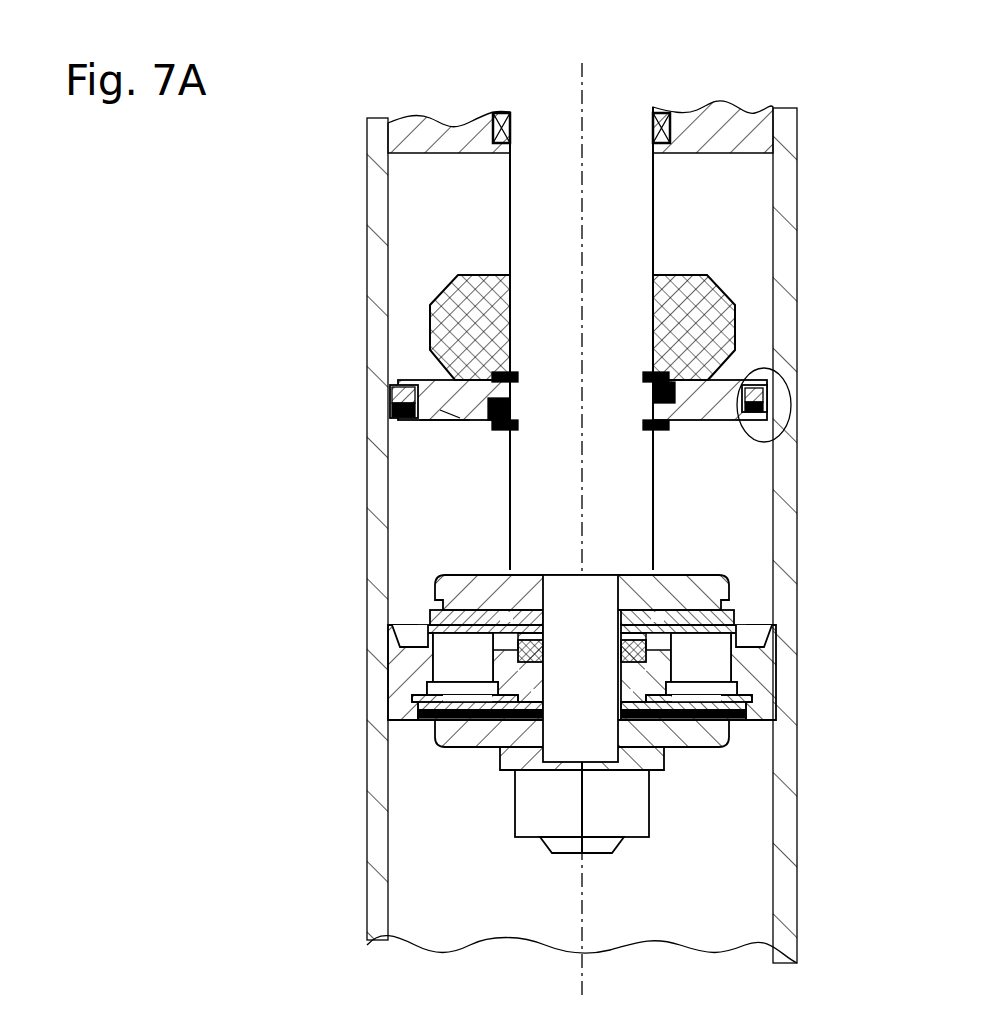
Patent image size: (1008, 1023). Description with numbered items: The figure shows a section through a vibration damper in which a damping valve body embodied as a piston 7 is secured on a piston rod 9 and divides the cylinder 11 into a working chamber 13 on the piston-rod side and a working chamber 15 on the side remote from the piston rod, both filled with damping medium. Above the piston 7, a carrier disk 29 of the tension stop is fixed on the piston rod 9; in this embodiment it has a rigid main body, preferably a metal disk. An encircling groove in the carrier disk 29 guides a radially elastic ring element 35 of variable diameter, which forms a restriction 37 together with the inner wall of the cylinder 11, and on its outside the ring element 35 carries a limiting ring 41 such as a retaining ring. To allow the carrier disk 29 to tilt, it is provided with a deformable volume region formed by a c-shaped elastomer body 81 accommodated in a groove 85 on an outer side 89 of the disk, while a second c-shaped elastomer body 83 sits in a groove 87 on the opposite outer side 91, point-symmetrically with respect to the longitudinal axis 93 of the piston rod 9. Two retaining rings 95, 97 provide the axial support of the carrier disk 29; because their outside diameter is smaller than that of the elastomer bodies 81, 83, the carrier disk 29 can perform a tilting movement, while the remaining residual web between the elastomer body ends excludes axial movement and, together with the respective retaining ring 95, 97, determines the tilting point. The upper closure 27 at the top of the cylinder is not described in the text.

The piston 7 is at (755, 673).
The piston rod 9 is at (630, 133).
The cylinder 11 is at (778, 860).
The working chamber on the piston-rod side 13 is at (726, 216).
The working chamber on the side remote from the piston rod 15 is at (709, 922).
The rod guide / end closure 27 is at (737, 123).
The carrier disk 29 is at (490, 392).
The ring element 35 is at (766, 423).
The restriction 37 is at (750, 383).
The limiting ring 41 is at (773, 397).
The deformable volume region 81 is at (675, 397).
The second deformable c-shaped elastomer body 83 is at (490, 410).
The groove 85 is at (668, 405).
The groove 87 is at (453, 414).
The outer side of the carrier disk 89 is at (410, 372).
The opposite outer side 91 is at (462, 423).
The longitudinal axis 93 is at (578, 73).
The retaining ring 95 is at (500, 360).
The retaining ring 97 is at (503, 430).